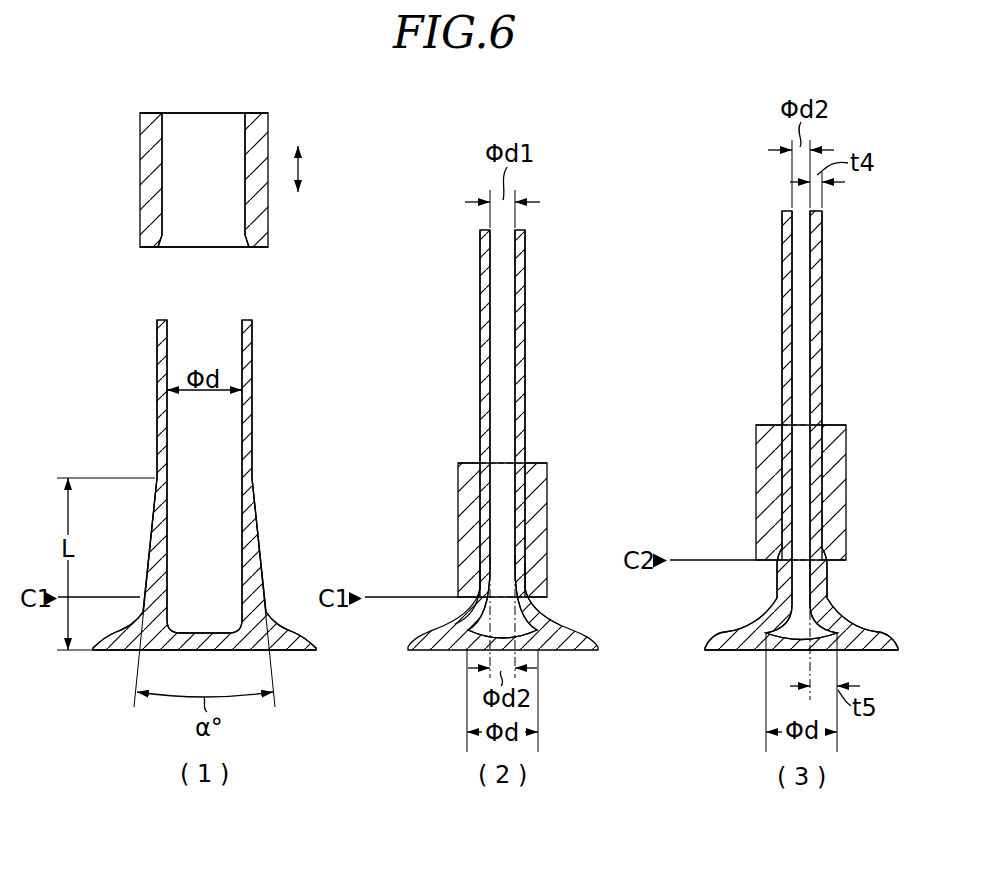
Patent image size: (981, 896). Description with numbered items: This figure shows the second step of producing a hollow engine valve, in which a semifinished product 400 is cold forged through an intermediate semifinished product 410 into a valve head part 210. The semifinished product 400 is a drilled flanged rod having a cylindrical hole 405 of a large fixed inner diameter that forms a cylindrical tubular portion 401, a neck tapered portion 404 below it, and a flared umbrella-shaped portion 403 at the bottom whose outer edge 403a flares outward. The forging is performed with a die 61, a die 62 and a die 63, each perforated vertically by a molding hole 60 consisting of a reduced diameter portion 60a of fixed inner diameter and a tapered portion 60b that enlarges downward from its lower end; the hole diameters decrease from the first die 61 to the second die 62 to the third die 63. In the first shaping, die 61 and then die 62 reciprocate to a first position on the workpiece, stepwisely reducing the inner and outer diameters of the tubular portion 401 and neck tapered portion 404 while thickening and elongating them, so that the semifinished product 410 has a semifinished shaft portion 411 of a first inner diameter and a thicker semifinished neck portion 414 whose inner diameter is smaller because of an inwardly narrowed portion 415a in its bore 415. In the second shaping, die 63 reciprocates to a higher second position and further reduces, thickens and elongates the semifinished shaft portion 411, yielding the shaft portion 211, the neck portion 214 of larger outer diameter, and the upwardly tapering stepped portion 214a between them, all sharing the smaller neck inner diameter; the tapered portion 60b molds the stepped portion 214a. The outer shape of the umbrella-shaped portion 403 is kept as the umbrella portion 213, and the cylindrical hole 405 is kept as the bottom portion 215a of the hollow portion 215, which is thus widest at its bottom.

The molding hole 60 is at (162, 128).
The reduced diameter portion 60a is at (246, 128).
The tapered portion 60b is at (246, 243).
The die 61 is at (140, 187).
The die 62 is at (548, 490).
The die 63 is at (848, 478).
The semifinished product 400 is at (256, 362).
The tubular portion 401 is at (254, 415).
The umbrella-shaped portion 403 is at (289, 626).
The outer edge of flange portion 403a is at (282, 653).
The neck tapered portion 404 is at (263, 557).
The cylindrical hole 405 is at (165, 360).
The semifinished product 410 is at (530, 310).
The semifinished shaft portion 411 is at (481, 366).
The semifinished neck portion 414 is at (463, 591).
The through hole 415 is at (490, 277).
The narrowed portion 415a is at (508, 560).
The valve head part 210 is at (826, 276).
The shaft portion 211 is at (783, 354).
The umbrella portion 213 is at (849, 628).
The neck portion 214 is at (776, 583).
The stepped portion 214a is at (827, 556).
The hollow portion 215 is at (790, 257).
The bottom portion 215a is at (786, 636).